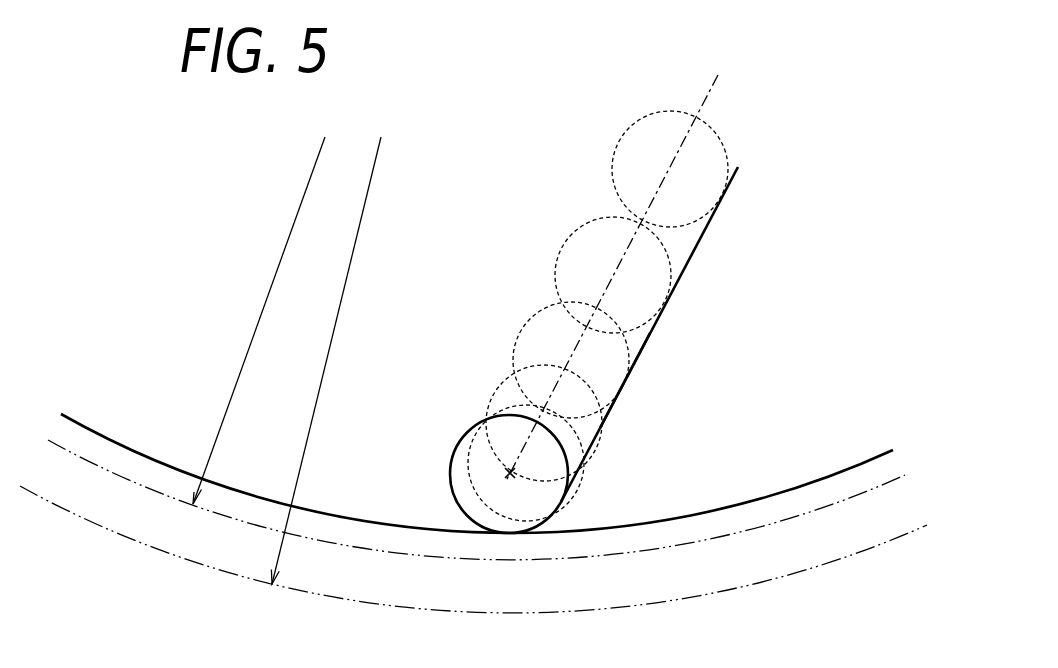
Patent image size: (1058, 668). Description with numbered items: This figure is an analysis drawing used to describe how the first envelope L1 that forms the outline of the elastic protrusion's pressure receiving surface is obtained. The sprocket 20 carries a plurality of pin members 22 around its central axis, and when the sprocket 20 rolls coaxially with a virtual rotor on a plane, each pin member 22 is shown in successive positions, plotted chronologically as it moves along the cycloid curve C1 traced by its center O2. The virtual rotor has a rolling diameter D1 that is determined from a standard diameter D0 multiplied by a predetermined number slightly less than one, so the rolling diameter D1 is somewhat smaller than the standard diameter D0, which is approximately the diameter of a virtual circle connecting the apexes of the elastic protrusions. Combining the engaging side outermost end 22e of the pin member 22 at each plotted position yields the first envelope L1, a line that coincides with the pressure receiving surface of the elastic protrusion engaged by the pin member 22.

The sprocket 20 is at (785, 490).
The pin member 22 is at (455, 459).
The engaging side outermost end 22e is at (627, 383).
The center of pin member O2 is at (505, 476).
The cycloid curve C1 is at (706, 93).
The first envelope L1 is at (691, 253).
The rolling diameter D1 is at (259, 320).
The standard diameter D0 is at (326, 360).